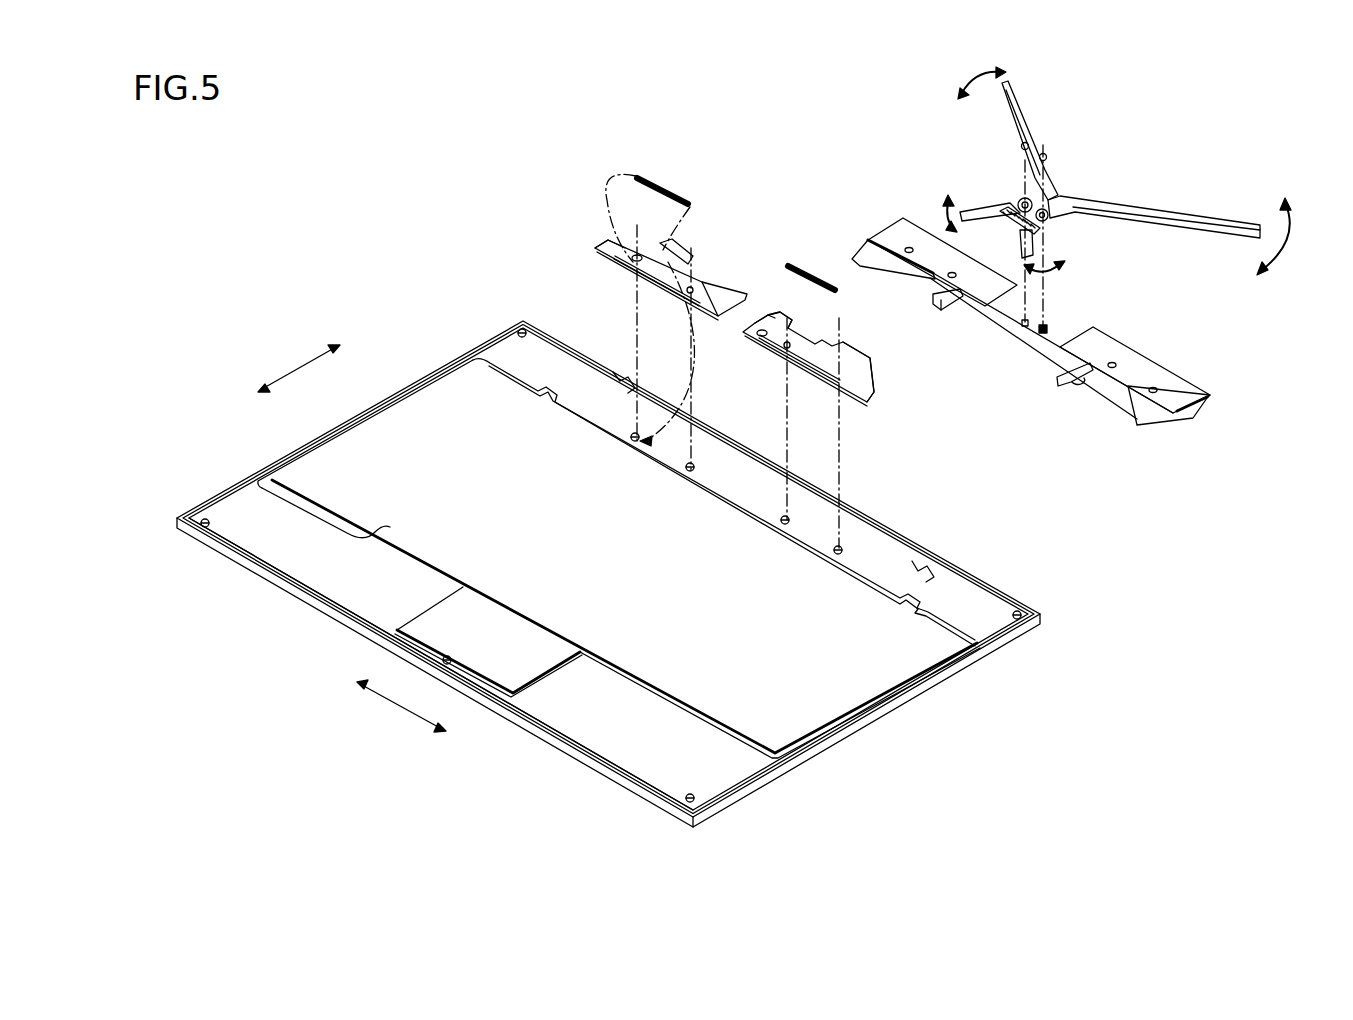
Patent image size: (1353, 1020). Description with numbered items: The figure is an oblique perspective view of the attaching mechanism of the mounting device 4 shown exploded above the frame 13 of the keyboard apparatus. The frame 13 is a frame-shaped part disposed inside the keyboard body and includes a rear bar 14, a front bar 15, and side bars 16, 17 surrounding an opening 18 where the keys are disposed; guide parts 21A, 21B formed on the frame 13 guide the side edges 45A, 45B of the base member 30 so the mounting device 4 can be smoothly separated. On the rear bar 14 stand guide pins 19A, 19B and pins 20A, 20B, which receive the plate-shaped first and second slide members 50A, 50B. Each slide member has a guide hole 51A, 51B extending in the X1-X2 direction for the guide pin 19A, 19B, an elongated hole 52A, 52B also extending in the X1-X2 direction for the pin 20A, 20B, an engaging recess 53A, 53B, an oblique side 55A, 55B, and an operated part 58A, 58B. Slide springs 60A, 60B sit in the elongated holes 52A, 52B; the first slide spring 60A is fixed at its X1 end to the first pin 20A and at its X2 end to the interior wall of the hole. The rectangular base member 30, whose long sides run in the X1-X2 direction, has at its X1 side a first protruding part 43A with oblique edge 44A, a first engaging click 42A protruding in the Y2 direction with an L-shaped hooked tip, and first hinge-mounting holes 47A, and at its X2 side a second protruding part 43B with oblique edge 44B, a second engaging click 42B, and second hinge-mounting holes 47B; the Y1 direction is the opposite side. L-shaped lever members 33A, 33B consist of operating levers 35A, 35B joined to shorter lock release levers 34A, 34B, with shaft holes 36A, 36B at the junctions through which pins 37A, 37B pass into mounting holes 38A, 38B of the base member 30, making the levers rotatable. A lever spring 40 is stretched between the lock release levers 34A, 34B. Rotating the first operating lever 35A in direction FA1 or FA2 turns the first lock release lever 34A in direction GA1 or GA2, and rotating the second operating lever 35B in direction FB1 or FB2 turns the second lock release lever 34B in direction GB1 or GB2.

The mounting device 4 is at (799, 150).
The frame 13 is at (962, 668).
The rear bar 14 is at (900, 560).
The front bar 15 is at (593, 742).
The side bar 16 is at (880, 695).
The side bar 17 is at (408, 391).
The opening 18 is at (458, 398).
The guide pin 19A is at (784, 526).
The guide pin 19B is at (688, 473).
The pin 20A is at (836, 556).
The pin 20B is at (632, 443).
The guide part 21A is at (937, 556).
The guide part 21B is at (627, 376).
The base member 30 is at (1068, 318).
The first lever member 33A is at (1158, 203).
The second lever member 33B is at (1061, 140).
The first lock release lever 34A is at (1032, 250).
The second lock release lever 34B is at (975, 213).
The first operating lever 35A is at (1198, 213).
The second operating lever 35B is at (1022, 105).
The first shaft hole 36A is at (1050, 218).
The second shaft hole 36B is at (1020, 200).
The first pin 37A is at (1048, 155).
The second pin 37B is at (1021, 144).
The first mounting hole 38A is at (1042, 333).
The second mounting hole 38B is at (1020, 325).
The lever spring 40 is at (1008, 220).
The first engaging click 42A is at (1066, 385).
The second engaging click 42B is at (938, 302).
The first protruding part 43A is at (1152, 410).
The second protruding part 43B is at (872, 242).
The oblique edge 44A is at (1130, 392).
The oblique edge 44B is at (888, 266).
The side edge 45A is at (1197, 412).
The side edge 45B is at (893, 232).
The first hinge-mounting hole 47A is at (1154, 386).
The second hinge-mounting hole 47B is at (952, 272).
The first slide member 50A is at (844, 369).
The second slide member 50B is at (639, 248).
The guide hole 51A is at (758, 320).
The guide hole 51B is at (690, 262).
The elongated hole 52A is at (787, 350).
The elongated hole 52B is at (636, 262).
The engaging recess 53A is at (828, 350).
The engaging recess 53B is at (690, 258).
The oblique side 55A is at (875, 375).
The oblique side 55B is at (600, 246).
The operated part 58A is at (784, 320).
The operated part 58B is at (728, 292).
The first slide spring 60A is at (817, 278).
The second slide spring 60B is at (672, 190).
The X1 direction X1 is at (419, 718).
The X2 direction X2 is at (349, 675).
The Y1 direction Y1 is at (316, 359).
The Y2 direction Y2 is at (244, 390).
The direction FA1 is at (1284, 224).
The direction FA2 is at (1253, 282).
The direction FB1 is at (1016, 75).
The direction FB2 is at (942, 101).
The direction GA1 is at (1072, 264).
The direction GA2 is at (1006, 258).
The direction GB1 is at (933, 199).
The direction GB2 is at (973, 236).